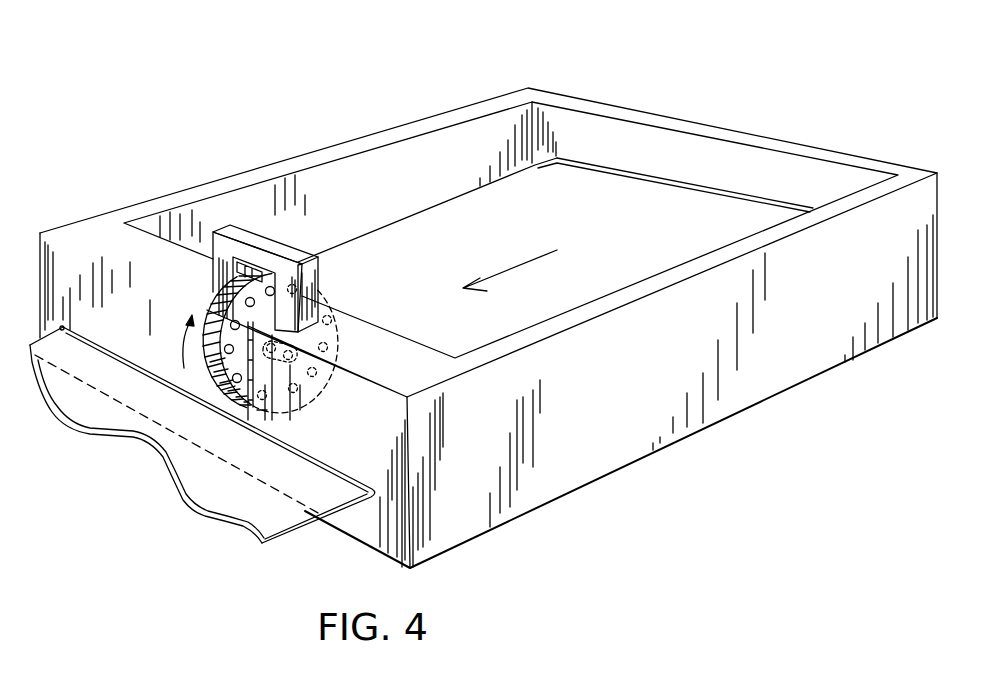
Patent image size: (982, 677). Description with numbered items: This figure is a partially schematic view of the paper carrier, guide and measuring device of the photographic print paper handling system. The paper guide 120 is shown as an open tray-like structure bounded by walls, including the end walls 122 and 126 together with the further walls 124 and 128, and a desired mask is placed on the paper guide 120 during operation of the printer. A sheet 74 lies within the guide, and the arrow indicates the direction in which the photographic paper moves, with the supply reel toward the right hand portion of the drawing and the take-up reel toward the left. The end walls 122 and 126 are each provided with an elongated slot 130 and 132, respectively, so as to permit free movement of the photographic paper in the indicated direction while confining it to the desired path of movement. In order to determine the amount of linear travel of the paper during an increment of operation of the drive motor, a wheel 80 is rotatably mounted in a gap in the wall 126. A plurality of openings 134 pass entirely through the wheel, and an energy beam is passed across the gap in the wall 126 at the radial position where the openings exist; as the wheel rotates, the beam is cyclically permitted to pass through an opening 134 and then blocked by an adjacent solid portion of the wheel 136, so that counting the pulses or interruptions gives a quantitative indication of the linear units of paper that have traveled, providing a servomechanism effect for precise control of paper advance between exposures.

The paper guide 120 is at (793, 141).
The end wall 122 is at (722, 172).
The back left wall 124 is at (380, 199).
The end wall 126 is at (367, 433).
The front right wall 128 is at (640, 392).
The sheet 74 is at (555, 209).
The elongated slot 130 is at (632, 172).
The wheel 80 is at (330, 291).
The elongated slot 132 is at (368, 497).
The openings 134 is at (248, 300).
The solid portion of wheel 136 is at (233, 344).